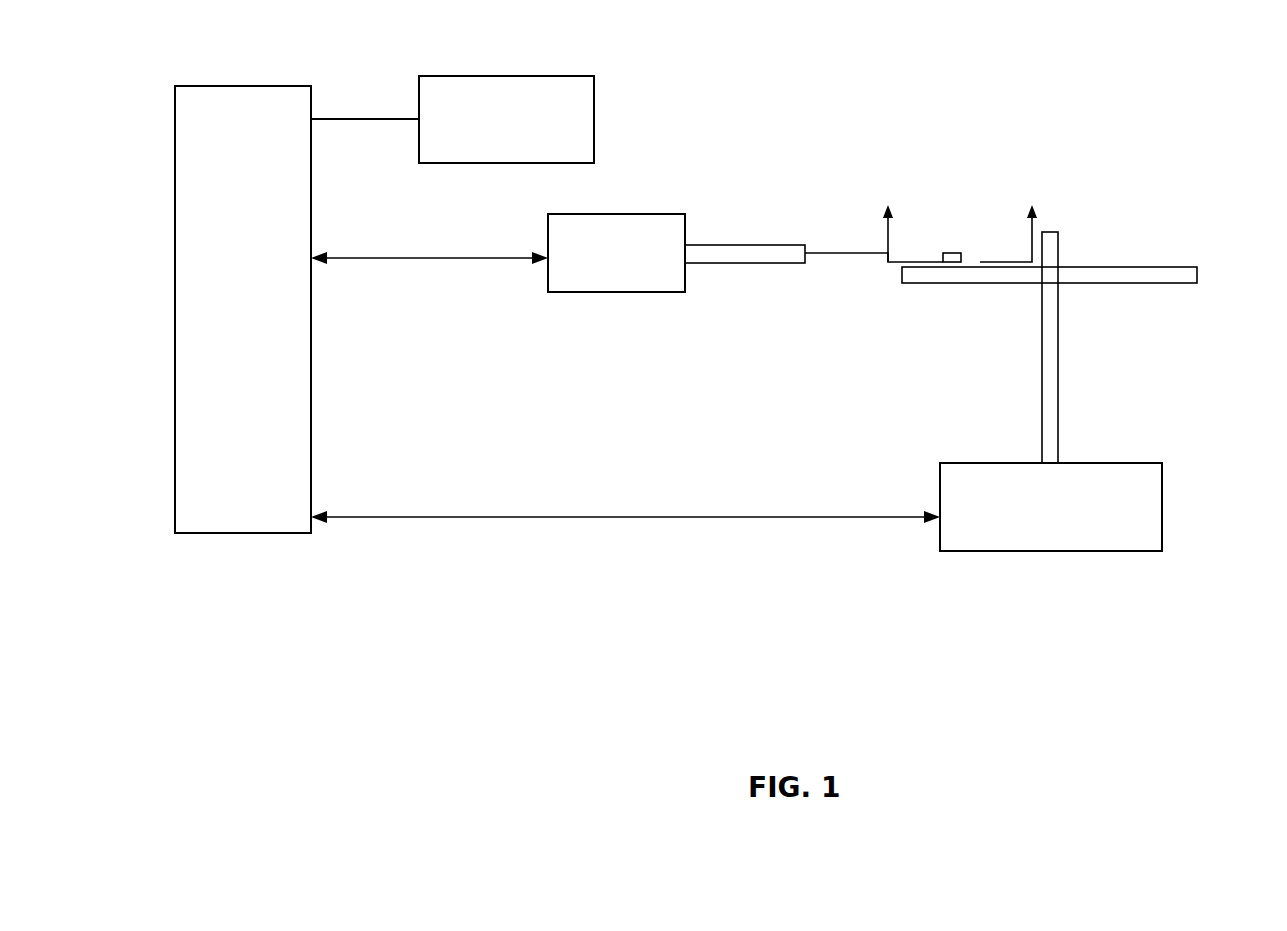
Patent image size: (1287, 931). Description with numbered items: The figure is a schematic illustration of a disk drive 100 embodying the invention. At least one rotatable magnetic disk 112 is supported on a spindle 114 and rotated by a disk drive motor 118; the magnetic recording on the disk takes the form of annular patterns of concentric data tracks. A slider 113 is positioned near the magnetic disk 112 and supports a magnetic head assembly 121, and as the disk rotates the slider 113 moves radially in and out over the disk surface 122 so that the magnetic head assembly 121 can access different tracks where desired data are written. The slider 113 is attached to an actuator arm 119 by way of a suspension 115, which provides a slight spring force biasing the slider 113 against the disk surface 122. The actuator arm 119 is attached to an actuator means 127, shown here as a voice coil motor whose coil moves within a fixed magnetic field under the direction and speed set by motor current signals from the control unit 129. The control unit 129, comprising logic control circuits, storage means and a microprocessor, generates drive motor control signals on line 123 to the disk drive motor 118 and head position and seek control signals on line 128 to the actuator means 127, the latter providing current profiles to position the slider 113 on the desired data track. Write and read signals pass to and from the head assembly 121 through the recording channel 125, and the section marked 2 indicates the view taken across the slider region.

The disk drive 100 is at (545, 627).
The magnetic disk 112 is at (1190, 295).
The slider 113 is at (947, 253).
The spindle 114 is at (1041, 343).
The suspension 115 is at (870, 250).
The disk drive motor 118 is at (1112, 463).
The actuator arm 119 is at (727, 245).
The magnetic head assembly 121 is at (962, 262).
The disk surface 122 is at (1150, 267).
The line 123 is at (652, 517).
The recording channel 125 is at (492, 75).
The actuator means 127 is at (620, 214).
The line 128 is at (435, 258).
The control unit 129 is at (241, 115).
The section line 2- 2 is at (961, 220).